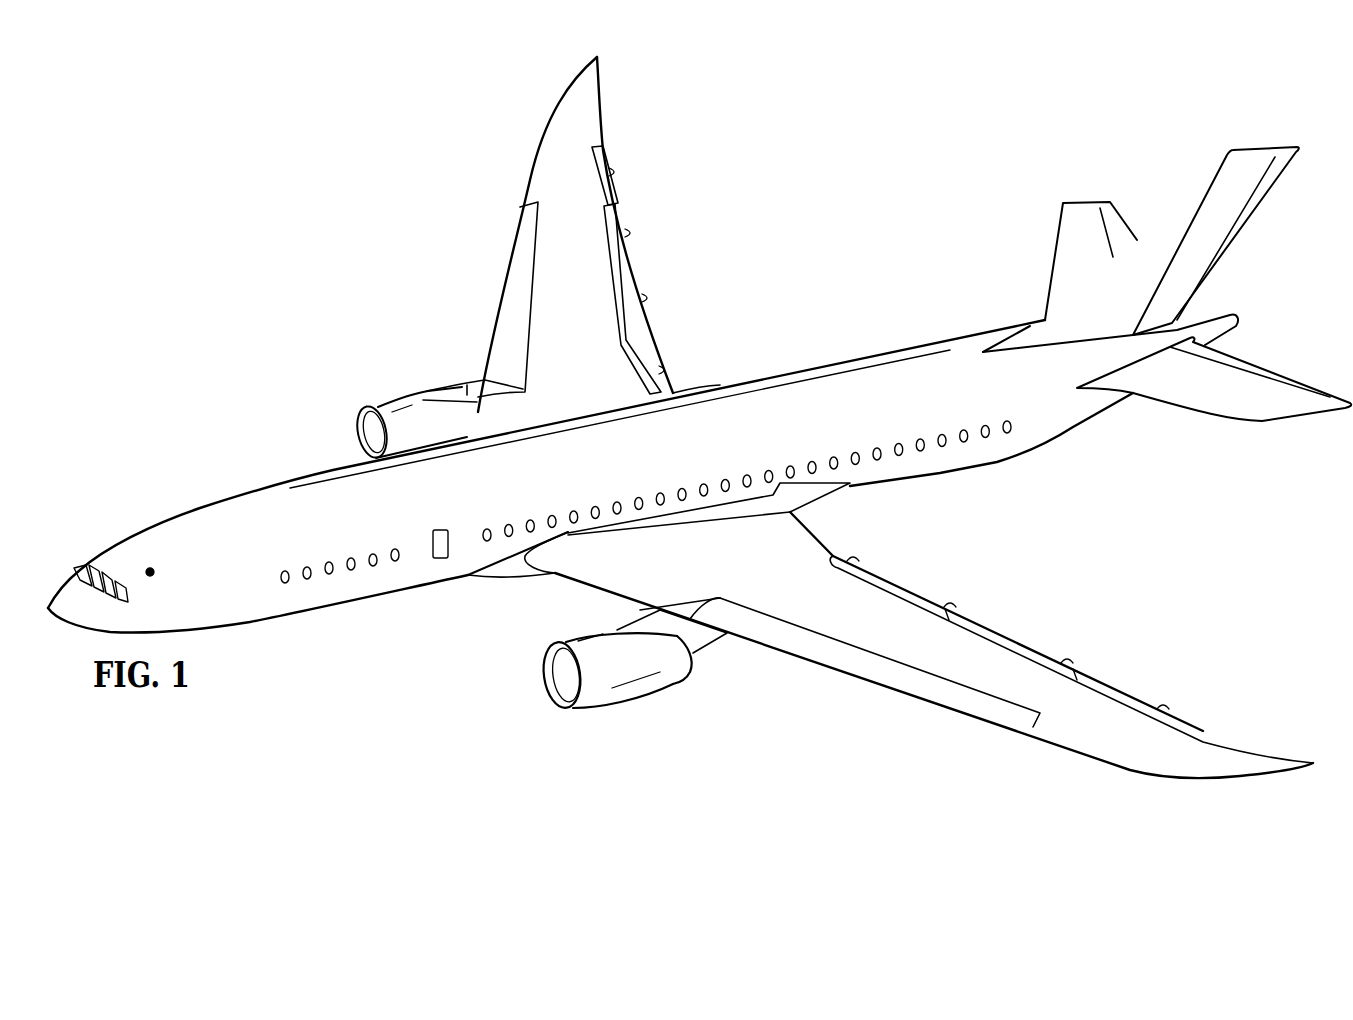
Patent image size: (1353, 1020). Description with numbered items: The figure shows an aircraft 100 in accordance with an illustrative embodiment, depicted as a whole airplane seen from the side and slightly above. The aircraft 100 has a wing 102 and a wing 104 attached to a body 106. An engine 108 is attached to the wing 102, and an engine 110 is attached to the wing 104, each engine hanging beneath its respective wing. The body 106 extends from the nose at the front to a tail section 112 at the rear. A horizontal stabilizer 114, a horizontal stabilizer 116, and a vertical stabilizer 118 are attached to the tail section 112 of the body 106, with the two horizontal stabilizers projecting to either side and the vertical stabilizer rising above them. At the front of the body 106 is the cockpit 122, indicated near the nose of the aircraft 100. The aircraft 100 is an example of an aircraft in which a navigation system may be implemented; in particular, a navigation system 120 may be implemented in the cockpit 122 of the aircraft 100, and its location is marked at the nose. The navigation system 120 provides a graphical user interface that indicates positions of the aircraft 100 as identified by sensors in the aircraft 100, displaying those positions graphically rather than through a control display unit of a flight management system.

The aircraft 100 is at (343, 295).
The wing 102 is at (600, 92).
The wing 104 is at (1162, 776).
The body 106 is at (224, 491).
The engine 108 is at (400, 388).
The engine 110 is at (638, 702).
The tail section 112 is at (1115, 462).
The horizontal stabilizer 114 is at (1055, 260).
The horizontal stabilizer 116 is at (1218, 418).
The vertical stabilizer 118 is at (1248, 232).
The navigation system 120 is at (155, 570).
The cockpit 122 is at (169, 540).